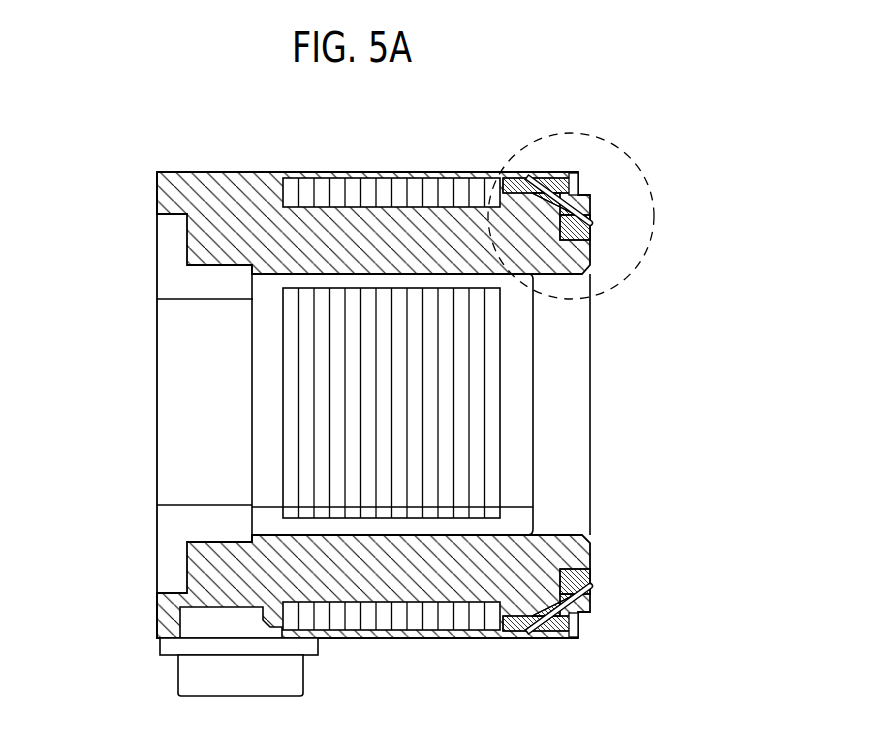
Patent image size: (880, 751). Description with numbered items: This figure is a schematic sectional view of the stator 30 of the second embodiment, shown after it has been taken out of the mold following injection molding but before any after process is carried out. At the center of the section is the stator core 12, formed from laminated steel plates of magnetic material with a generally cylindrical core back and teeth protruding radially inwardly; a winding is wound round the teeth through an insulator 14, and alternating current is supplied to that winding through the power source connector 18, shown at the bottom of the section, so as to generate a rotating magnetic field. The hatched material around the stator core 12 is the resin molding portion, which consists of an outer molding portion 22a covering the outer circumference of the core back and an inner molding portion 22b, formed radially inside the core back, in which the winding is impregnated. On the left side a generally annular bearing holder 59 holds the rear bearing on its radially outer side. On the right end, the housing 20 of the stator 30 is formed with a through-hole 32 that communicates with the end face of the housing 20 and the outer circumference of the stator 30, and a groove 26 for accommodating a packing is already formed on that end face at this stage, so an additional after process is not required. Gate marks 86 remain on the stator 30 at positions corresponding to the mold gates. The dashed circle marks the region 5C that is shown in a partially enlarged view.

The stator 30 is at (71, 151).
The inner molding portion 22b is at (277, 250).
The outer molding portion 22a is at (446, 172).
The stator core 12 is at (352, 190).
The insulator 14 is at (268, 289).
The bearing holder 59 is at (184, 278).
The groove 26 is at (577, 187).
The housing 20 is at (590, 235).
The through-hole 32 is at (590, 207).
The gate marks 86 is at (590, 552).
The power source connector 18 is at (178, 680).
The region 5C is at (668, 196).